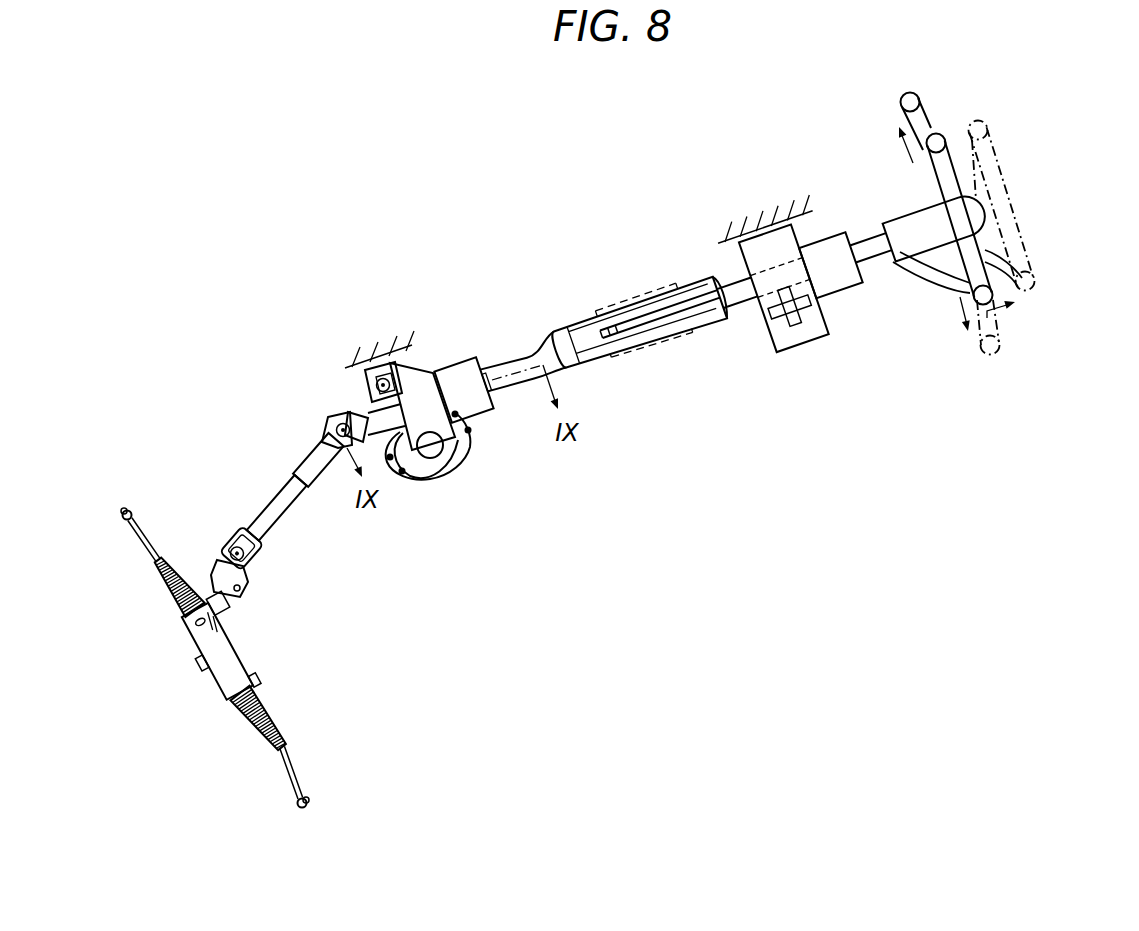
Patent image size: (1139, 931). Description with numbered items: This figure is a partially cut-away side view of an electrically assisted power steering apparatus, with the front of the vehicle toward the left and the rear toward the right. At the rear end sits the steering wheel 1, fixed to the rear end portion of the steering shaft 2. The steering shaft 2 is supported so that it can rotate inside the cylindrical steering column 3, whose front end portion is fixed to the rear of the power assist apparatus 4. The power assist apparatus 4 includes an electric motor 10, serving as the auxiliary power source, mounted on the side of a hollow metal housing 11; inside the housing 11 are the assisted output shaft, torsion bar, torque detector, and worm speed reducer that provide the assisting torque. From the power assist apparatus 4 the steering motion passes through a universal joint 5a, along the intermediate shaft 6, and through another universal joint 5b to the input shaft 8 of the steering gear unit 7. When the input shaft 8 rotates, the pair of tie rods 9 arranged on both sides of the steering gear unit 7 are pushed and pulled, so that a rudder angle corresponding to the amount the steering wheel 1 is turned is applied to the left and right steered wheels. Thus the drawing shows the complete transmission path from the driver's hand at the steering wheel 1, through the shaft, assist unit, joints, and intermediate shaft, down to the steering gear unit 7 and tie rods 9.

The steering wheel 1 is at (997, 345).
The steering shaft 2 is at (583, 348).
The steering column 3 is at (690, 340).
The power assist apparatus 4 is at (420, 402).
The universal joint 5a is at (333, 418).
The universal joint 5b is at (225, 546).
The intermediate shaft 6 is at (275, 513).
The steering gear unit 7 is at (227, 668).
The input shaft 8 is at (233, 608).
The tie rods 9 is at (123, 527).
The electric motor 10 is at (443, 463).
The housing 11 is at (463, 380).